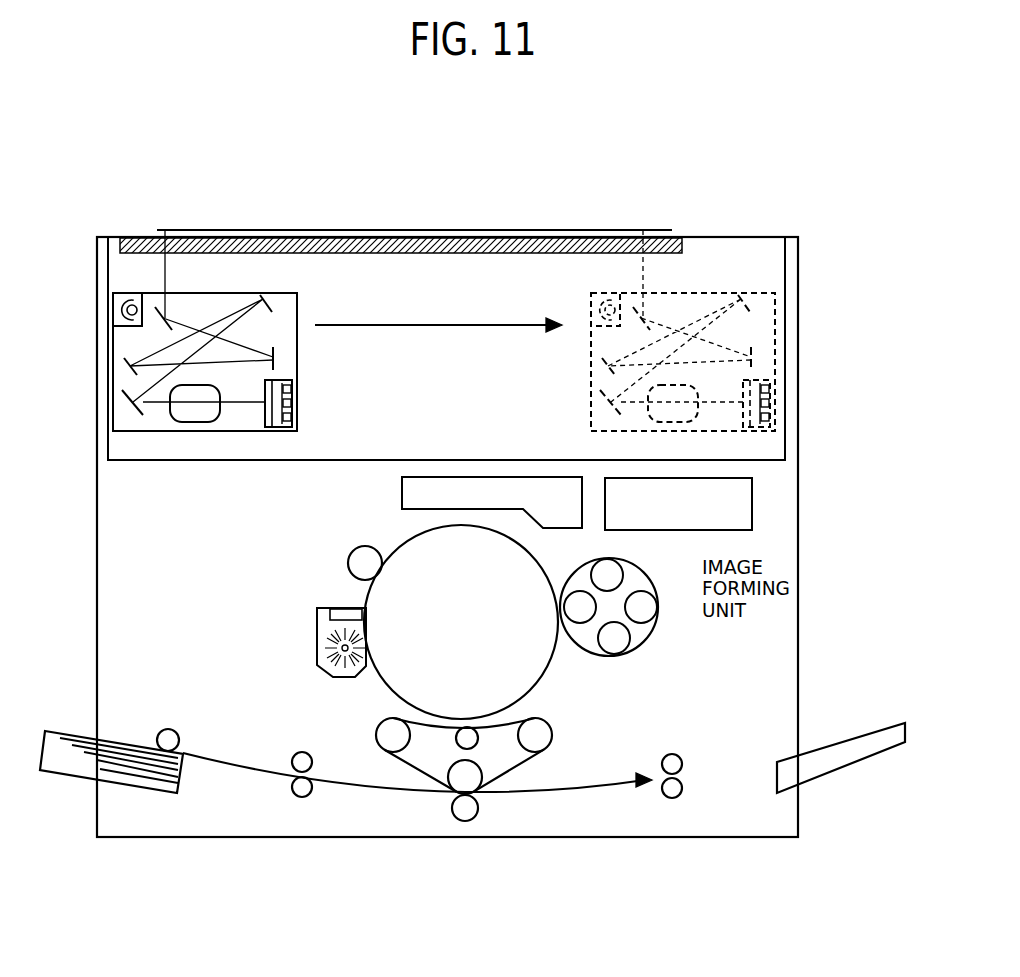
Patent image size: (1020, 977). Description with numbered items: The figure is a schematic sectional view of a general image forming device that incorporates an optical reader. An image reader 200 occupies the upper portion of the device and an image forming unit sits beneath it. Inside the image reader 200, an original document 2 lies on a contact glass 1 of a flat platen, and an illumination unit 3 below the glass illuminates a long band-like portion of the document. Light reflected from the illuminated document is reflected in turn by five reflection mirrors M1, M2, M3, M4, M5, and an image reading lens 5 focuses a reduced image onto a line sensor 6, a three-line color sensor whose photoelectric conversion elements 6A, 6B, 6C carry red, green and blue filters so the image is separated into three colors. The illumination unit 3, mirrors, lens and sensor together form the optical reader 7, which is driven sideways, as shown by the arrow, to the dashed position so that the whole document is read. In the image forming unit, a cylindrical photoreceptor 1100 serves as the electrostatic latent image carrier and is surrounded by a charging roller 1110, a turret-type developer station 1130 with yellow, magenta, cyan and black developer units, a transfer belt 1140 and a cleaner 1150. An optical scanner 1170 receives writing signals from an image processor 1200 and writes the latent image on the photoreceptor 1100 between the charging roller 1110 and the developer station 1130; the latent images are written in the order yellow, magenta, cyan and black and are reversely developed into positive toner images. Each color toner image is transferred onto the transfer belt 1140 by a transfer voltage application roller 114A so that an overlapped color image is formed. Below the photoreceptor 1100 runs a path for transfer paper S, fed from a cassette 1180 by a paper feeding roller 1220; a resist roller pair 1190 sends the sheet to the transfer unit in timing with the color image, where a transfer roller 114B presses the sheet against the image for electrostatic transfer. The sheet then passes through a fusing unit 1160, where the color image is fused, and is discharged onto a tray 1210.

The contact glass 1 is at (138, 241).
The original document 2 is at (258, 230).
The illumination unit 3 is at (132, 300).
The image reading lens 5 is at (200, 424).
The line sensor 6 is at (277, 429).
The photoelectric conversion element 6A is at (292, 389).
The photoelectric conversion element 6B is at (292, 403).
The photoelectric conversion element 6C is at (286, 425).
The optical reader 7 is at (112, 412).
The reflection mirror M1 is at (165, 330).
The reflection mirror M2 is at (275, 360).
The reflection mirror M3 is at (122, 369).
The reflection mirror M4 is at (267, 297).
The reflection mirror M5 is at (137, 417).
The image reader 200 is at (800, 249).
The photoreceptor 1100 is at (441, 638).
The charging roller 1110 is at (352, 563).
The turret-type developer station 1130 is at (638, 636).
The transfer belt 1140 is at (520, 767).
The transfer voltage application roller 114A is at (470, 727).
The transfer roller 114B is at (476, 806).
The cleaner 1150 is at (317, 644).
The fusing unit 1160 is at (676, 788).
The optical scanner 1170 is at (402, 497).
The cassette 1180 is at (127, 777).
The resist roller pair 1190 is at (304, 787).
The image processor 1200 is at (742, 497).
The tray 1210 is at (830, 760).
The paper feeding roller 1220 is at (168, 729).
The transfer paper S is at (76, 740).